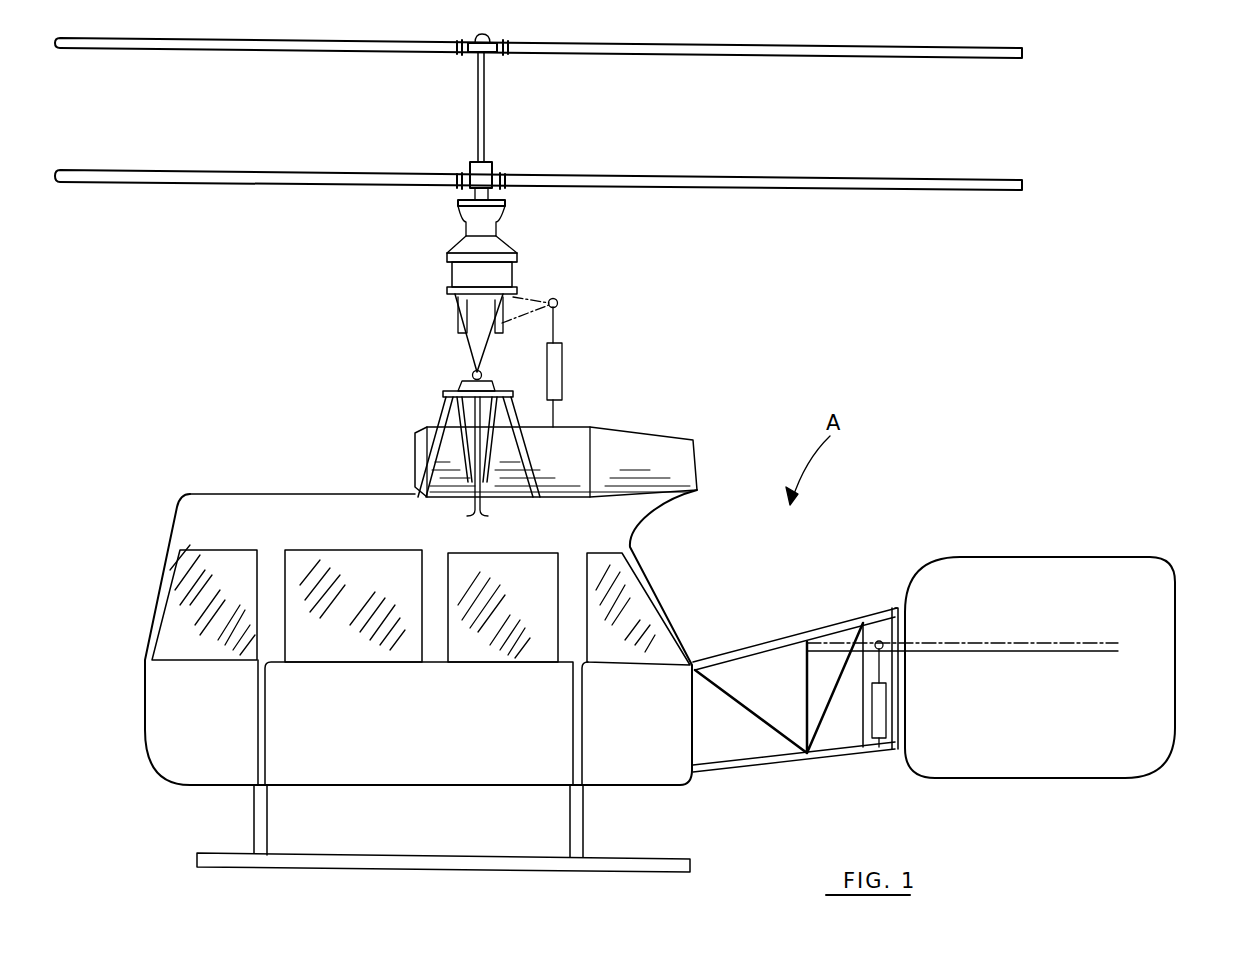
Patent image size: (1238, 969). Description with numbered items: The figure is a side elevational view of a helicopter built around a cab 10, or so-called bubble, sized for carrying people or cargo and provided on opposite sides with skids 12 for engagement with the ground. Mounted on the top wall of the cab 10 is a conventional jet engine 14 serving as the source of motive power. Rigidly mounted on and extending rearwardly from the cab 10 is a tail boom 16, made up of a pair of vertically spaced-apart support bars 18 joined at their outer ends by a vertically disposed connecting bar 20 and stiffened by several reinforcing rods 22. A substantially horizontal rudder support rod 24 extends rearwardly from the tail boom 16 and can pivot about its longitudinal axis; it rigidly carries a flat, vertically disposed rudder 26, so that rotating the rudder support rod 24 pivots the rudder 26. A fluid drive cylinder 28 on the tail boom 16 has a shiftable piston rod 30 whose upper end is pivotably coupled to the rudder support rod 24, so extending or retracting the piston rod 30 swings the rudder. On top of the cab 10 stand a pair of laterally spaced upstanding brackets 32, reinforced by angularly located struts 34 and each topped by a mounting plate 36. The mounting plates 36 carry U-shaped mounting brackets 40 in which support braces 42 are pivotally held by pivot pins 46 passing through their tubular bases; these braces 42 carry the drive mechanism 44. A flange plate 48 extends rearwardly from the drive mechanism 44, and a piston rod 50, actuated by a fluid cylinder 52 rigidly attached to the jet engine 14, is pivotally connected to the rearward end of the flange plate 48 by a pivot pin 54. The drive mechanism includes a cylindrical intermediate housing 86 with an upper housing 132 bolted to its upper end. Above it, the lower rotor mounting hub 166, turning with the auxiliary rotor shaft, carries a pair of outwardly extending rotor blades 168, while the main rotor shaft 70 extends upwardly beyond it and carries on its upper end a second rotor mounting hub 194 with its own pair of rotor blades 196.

The cab 10 is at (212, 490).
The skids 12 is at (480, 865).
The jet engine 14 is at (652, 440).
The tail boom 16 is at (806, 618).
The support bars 18 is at (748, 636).
The connecting bar 20 is at (898, 632).
The reinforcing rods 22 is at (727, 692).
The rudder support rod 24 is at (1010, 642).
The rudder 26 is at (1163, 662).
The fluid drive cylinder 28 is at (883, 725).
The piston rod 30 is at (882, 678).
The upstanding brackets 32 is at (470, 483).
The struts 34 is at (523, 460).
The top mounting plate 36 is at (442, 395).
The U-shaped mounting brackets 40 is at (456, 380).
The support braces 42 is at (470, 304).
The drive mechanism 44 is at (535, 255).
The pivot pins 46 is at (474, 372).
The flange plate 48 is at (516, 306).
The piston rod 50 is at (556, 325).
The fluid cylinder 52 is at (556, 378).
The pivot pin 54 is at (558, 302).
The main rotor shaft 70 is at (477, 107).
The intermediate housing 86 is at (457, 275).
The upper housing 132 is at (465, 250).
The rotor mounting hub 166 is at (485, 178).
The rotor blades 168 is at (685, 180).
The rotor mounting hub 194 is at (488, 42).
The rotor blades 196 is at (570, 49).